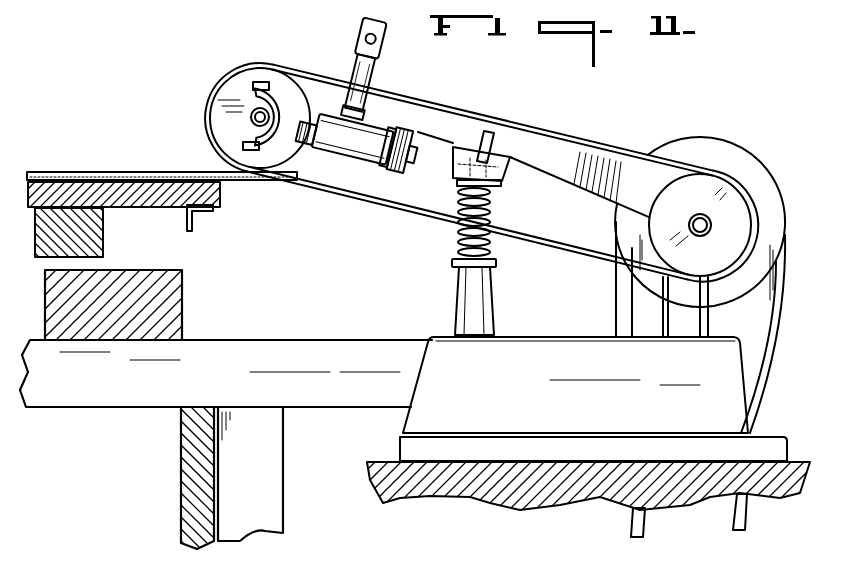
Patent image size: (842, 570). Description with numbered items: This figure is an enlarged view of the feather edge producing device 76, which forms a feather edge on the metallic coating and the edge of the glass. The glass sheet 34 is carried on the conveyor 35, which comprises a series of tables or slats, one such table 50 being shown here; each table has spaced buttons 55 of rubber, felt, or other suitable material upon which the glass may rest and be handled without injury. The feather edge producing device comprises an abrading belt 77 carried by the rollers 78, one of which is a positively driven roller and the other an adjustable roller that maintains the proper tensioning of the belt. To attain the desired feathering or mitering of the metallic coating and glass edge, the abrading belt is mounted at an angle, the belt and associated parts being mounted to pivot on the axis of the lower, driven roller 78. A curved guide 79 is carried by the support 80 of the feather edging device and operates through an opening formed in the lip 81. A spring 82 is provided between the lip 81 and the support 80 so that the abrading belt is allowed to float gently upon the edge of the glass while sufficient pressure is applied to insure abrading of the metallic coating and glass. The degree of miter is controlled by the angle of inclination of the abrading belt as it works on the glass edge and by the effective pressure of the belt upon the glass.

The rollers 78 is at (230, 94).
The feather edge producing device 76 is at (468, 100).
The abrading belt 77 is at (377, 191).
The curved guide 79 is at (497, 143).
The lip 81 is at (505, 180).
The spring 82 is at (460, 237).
The support 80 is at (523, 350).
The buttons 55 is at (82, 172).
The glass sheet 34 is at (171, 150).
The conveyor 35 is at (222, 196).
The table 50 is at (115, 203).